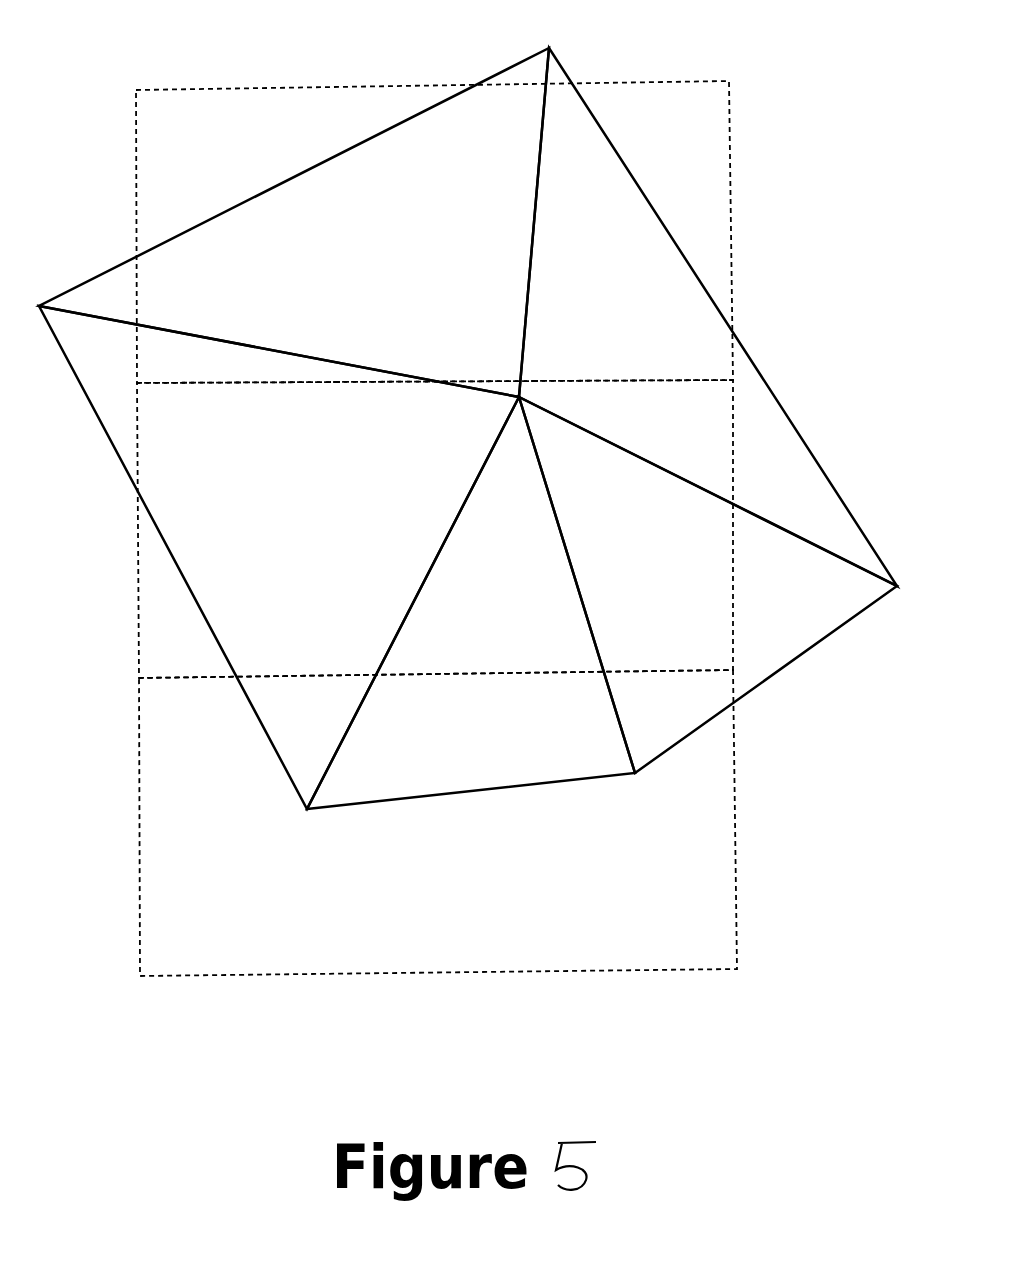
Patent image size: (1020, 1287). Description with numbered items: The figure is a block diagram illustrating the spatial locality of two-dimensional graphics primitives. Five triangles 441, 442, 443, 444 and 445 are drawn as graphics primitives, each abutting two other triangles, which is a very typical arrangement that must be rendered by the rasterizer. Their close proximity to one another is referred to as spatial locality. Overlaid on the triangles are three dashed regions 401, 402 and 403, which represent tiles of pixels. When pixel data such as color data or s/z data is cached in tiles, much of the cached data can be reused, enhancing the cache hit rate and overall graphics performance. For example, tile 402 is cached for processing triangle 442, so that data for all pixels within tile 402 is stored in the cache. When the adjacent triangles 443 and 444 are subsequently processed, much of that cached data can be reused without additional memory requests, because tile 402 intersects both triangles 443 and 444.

The tile 401 is at (210, 108).
The tile 402 is at (152, 627).
The tile 403 is at (158, 896).
The triangle 441 is at (762, 436).
The triangle 442 is at (786, 644).
The triangle 443 is at (490, 755).
The triangle 444 is at (205, 513).
The triangle 445 is at (105, 290).